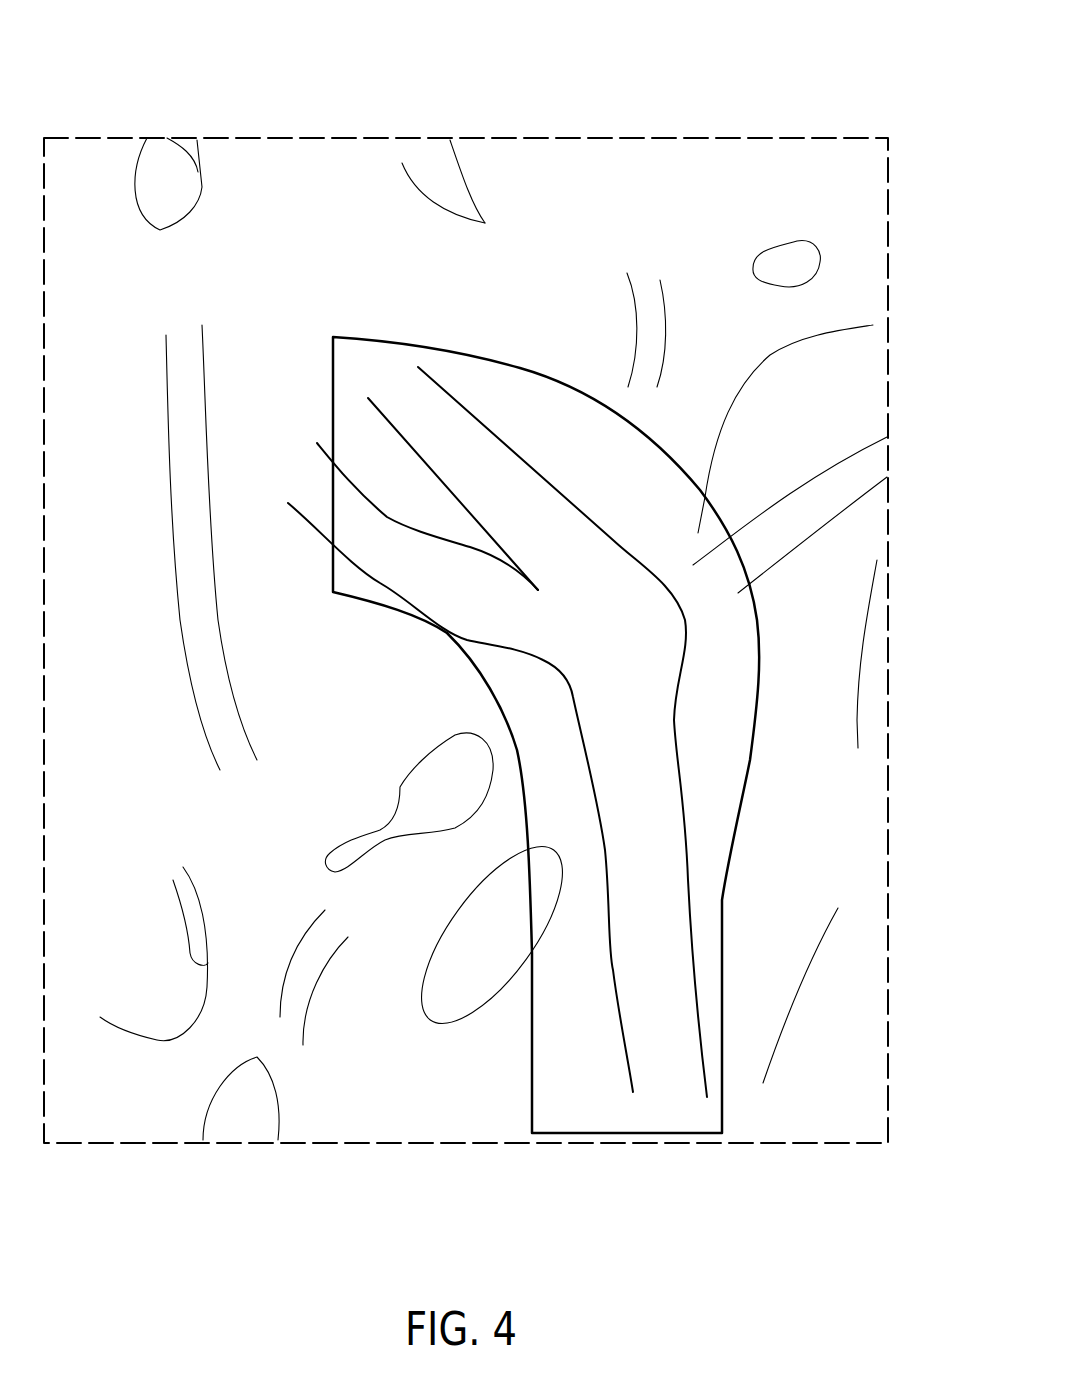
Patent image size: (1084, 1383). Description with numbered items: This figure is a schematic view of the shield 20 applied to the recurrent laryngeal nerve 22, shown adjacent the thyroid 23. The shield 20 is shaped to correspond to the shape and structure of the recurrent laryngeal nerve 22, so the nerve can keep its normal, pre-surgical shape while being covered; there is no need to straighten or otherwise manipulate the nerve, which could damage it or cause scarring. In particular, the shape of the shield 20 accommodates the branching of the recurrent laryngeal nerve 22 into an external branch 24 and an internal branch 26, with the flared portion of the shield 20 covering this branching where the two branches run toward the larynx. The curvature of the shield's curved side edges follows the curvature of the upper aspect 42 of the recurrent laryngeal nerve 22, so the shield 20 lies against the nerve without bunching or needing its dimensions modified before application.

The shield 20 is at (573, 427).
The recurrent laryngeal nerve 22 is at (617, 538).
The thyroid 23 is at (613, 195).
The external branch 24 is at (467, 473).
The internal branch 26 is at (370, 542).
The upper aspect 42 is at (640, 622).